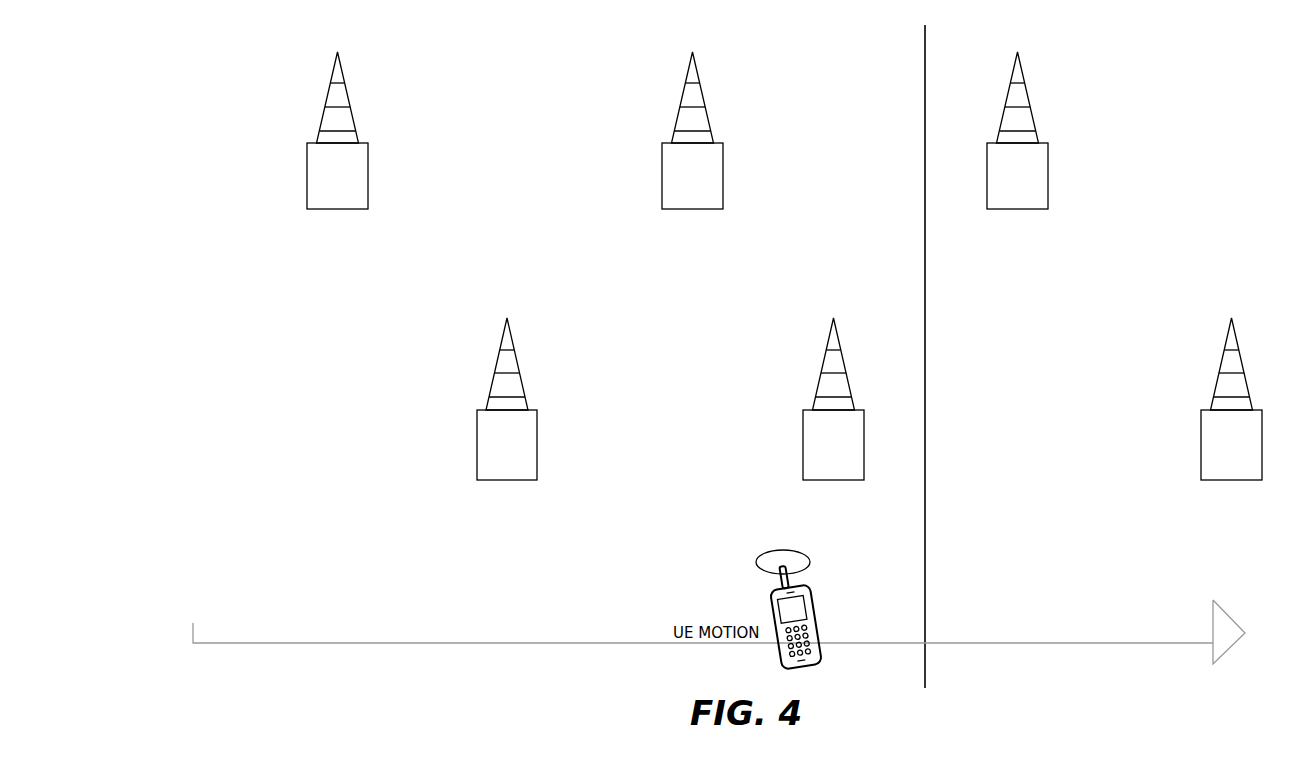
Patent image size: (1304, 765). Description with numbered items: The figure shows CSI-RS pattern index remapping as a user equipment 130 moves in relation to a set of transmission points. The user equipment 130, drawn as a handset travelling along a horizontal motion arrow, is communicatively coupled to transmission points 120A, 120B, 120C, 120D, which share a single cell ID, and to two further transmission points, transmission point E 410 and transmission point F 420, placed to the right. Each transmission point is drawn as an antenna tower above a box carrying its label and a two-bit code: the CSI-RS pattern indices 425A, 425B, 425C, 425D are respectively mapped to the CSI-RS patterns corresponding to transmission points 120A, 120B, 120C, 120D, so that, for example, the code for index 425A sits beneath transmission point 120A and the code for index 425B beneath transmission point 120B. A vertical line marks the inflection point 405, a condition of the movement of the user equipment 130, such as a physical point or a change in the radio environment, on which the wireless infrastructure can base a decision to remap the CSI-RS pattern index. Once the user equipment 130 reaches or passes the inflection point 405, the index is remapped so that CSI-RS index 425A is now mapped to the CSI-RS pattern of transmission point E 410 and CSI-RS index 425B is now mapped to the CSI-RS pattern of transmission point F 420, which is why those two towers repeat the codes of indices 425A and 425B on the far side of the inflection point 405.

The transmission point A 120A is at (451, 399).
The transmission point B 120B is at (282, 130).
The transmission point C 120C is at (778, 399).
The transmission point D 120D is at (636, 130).
The user equipment 130 is at (743, 621).
The inflection point 405 is at (872, 356).
The transmission point E 410 is at (1071, 130).
The transmission point F 420 is at (1182, 399).
The CSI-RS pattern index 425A is at (812, 452).
The CSI-RS pattern index 425B is at (736, 180).
The CSI-RS pattern index 425C is at (776, 452).
The CSI-RS pattern index 425D is at (752, 180).